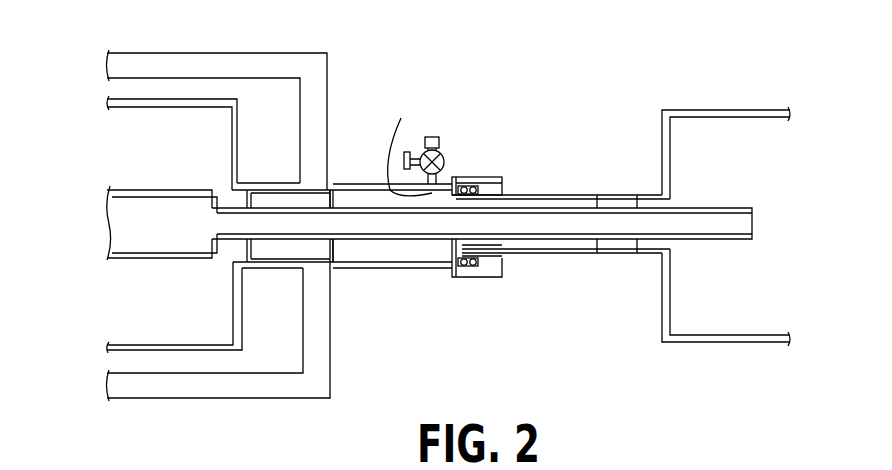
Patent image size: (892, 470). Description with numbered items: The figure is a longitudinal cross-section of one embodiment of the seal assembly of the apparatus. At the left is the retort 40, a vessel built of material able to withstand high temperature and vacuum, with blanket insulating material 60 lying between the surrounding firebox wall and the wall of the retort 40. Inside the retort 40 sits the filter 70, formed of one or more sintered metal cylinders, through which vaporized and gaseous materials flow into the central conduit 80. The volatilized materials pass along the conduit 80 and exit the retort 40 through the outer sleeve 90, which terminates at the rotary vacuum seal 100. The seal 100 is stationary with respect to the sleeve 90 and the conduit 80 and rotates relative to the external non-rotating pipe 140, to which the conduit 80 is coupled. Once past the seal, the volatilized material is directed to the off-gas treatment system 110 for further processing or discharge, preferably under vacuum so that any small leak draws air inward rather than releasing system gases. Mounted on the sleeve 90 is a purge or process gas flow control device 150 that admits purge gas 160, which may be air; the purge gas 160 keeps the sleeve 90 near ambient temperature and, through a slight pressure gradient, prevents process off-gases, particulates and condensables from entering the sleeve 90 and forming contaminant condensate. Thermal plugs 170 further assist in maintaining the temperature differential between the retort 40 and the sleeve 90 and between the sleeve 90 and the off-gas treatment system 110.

The retort 40 is at (173, 117).
The blanket insulating material 60 is at (262, 60).
The filter 70 is at (168, 192).
The conduit 80 is at (413, 230).
The sleeve 90 is at (341, 183).
The rotary vacuum seal 100 is at (477, 282).
The off-gas treatment system 110 is at (722, 128).
The external non-rotating pipe 140 is at (550, 192).
The purge or process gas flow control device 150 is at (442, 146).
The purge gas 160 is at (410, 146).
The thermal plugs 170 is at (333, 242).